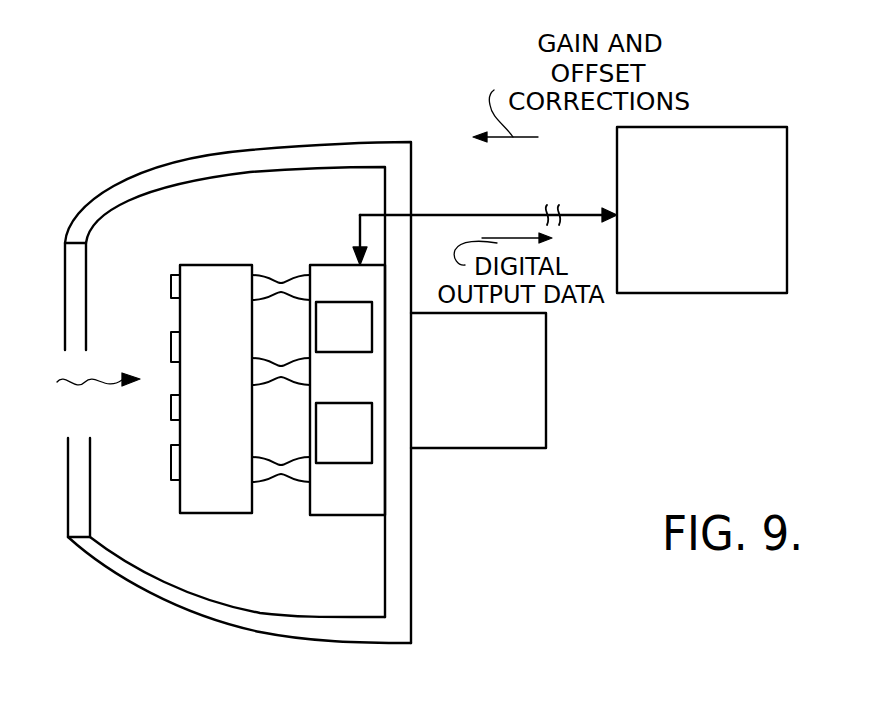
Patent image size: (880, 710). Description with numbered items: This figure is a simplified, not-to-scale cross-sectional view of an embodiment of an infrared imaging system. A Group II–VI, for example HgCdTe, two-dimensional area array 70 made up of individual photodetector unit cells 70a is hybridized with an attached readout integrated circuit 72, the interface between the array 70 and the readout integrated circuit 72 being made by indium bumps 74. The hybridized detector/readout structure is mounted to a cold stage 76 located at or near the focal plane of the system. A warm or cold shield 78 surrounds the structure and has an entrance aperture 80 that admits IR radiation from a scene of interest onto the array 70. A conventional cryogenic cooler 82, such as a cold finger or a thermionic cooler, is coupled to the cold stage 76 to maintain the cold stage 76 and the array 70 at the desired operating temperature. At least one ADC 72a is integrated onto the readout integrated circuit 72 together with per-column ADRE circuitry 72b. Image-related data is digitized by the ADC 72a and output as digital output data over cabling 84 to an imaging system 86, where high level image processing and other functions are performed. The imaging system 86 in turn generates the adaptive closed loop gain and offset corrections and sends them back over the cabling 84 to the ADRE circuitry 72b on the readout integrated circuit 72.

The two-dimensional area array 70 is at (218, 514).
The photodetector unit cells 70a is at (172, 352).
The readout integrated circuit 72 is at (340, 517).
The ADC 72a is at (341, 352).
The ADRE circuitry 72b is at (332, 464).
The indium bumps 74 is at (265, 272).
The cold stage 76 is at (413, 588).
The shield 78 is at (181, 613).
The entrance aperture 80 is at (68, 537).
The cryogenic cooler 82 is at (480, 450).
The cabling 84 is at (470, 215).
The imaging system 86 is at (712, 293).